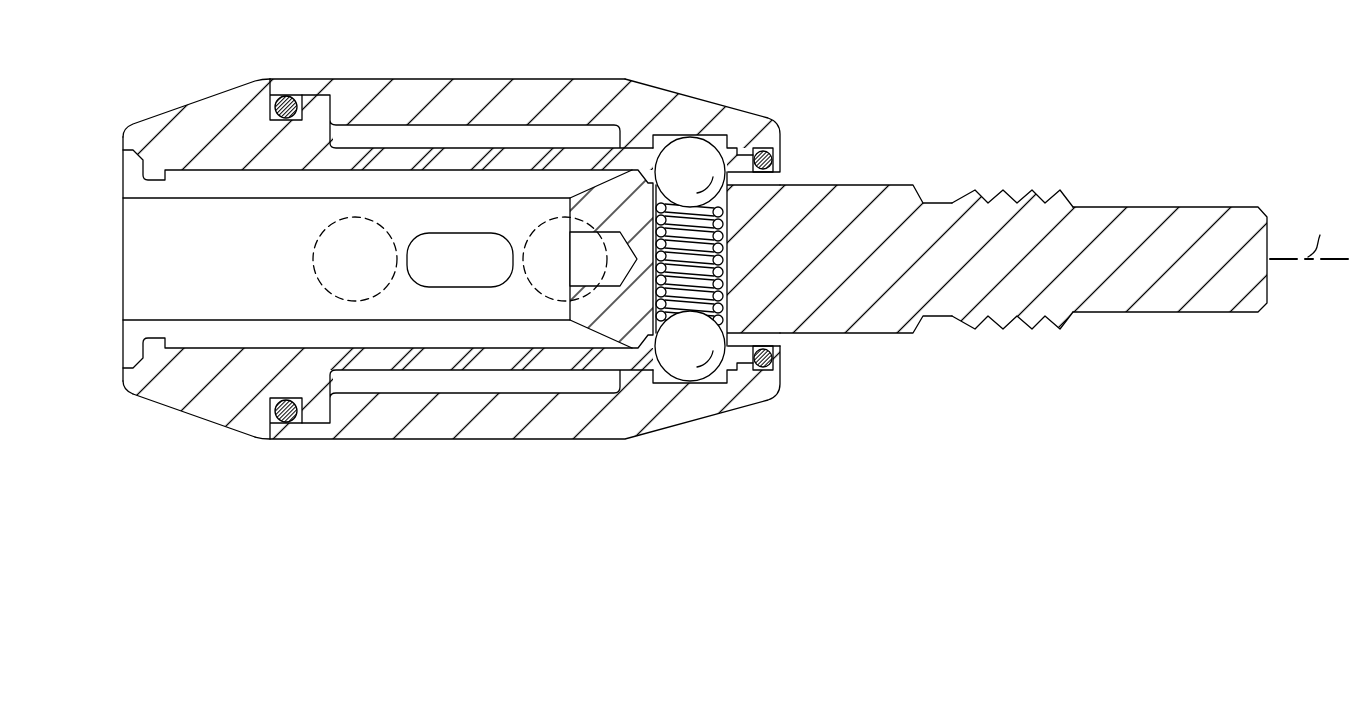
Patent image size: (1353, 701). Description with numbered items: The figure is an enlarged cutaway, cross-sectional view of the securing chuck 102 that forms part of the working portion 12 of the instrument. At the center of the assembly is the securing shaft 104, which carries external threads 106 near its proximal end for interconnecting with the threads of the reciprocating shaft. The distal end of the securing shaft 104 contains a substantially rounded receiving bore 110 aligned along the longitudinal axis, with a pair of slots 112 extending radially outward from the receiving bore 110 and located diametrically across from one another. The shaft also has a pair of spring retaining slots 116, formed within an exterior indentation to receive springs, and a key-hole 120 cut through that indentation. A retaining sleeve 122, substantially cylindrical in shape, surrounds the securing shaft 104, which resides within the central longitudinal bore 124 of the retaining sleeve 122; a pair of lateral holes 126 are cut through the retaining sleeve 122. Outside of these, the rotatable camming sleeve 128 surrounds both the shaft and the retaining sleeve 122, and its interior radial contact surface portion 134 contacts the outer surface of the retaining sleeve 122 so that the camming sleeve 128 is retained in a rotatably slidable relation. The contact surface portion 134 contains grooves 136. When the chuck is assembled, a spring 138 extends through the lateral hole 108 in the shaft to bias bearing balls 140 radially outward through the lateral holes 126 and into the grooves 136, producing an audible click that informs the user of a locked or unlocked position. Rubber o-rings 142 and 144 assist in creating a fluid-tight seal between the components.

The working portion 12 is at (871, 48).
The securing chuck 102 is at (491, 76).
The securing shaft 104 is at (899, 180).
The external threads 106 is at (1040, 190).
The lateral hole 108 is at (737, 200).
The receiving bore 110 is at (123, 287).
The slots 112 is at (197, 196).
The spring retaining slots 116 is at (370, 269).
The key-hole 120 is at (440, 271).
The retaining sleeve 122 is at (166, 416).
The central longitudinal bore 124 is at (226, 173).
The lateral holes 126 is at (778, 173).
The camming sleeve 128 is at (425, 79).
The interior radial contact surface portion 134 is at (620, 123).
The grooves 136 is at (732, 140).
The spring 138 is at (730, 256).
The bearing balls 140 is at (690, 150).
The rubber o-ring 142 is at (780, 370).
The rubber o-ring 144 is at (292, 93).